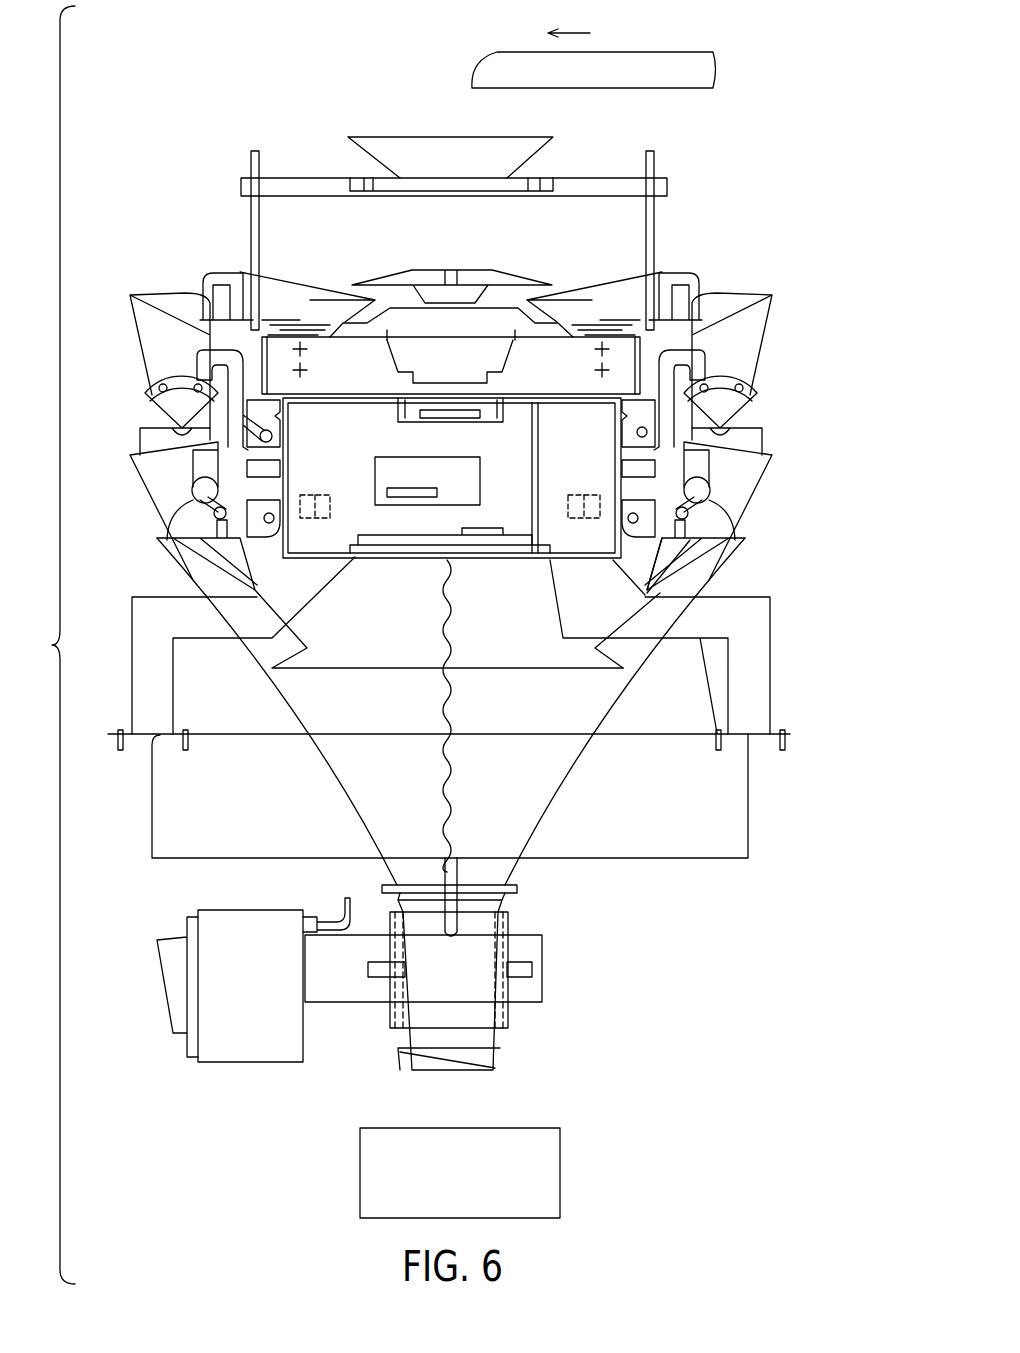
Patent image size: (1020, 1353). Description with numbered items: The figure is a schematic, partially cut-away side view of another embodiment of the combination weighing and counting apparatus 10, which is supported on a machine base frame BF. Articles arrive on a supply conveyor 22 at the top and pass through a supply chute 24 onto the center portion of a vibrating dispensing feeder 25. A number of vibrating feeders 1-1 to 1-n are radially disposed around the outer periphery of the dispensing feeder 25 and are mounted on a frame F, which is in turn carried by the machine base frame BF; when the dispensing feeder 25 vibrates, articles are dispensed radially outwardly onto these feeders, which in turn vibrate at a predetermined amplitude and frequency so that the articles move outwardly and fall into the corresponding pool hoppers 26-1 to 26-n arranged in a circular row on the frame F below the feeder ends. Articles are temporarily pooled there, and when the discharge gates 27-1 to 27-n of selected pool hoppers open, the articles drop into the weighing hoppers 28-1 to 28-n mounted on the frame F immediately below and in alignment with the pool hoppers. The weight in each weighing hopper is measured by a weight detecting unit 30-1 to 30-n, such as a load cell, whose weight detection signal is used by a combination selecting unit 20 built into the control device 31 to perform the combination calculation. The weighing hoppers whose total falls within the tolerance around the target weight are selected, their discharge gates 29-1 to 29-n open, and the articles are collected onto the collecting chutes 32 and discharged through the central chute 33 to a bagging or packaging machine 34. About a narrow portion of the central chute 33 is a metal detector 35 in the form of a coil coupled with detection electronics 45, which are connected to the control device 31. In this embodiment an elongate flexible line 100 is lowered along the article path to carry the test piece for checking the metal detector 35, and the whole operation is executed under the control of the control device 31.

The supply conveyor 22 is at (615, 52).
The supply chute 24 is at (545, 145).
The dispensing feeder 25 is at (488, 267).
The vibrating feeder 1-1 is at (222, 277).
The vibrating feeder 1-n is at (683, 277).
The pool hopper 26-1 is at (157, 345).
The pool hopper 26-n is at (752, 332).
The discharge gate 27-1 is at (173, 410).
The discharge gate 27-n is at (732, 407).
The weighing hopper 28-1 is at (152, 475).
The weighing hopper 28-n is at (738, 467).
The discharge gate 29-1 is at (180, 520).
The discharge gate 29-n is at (715, 515).
The frame F is at (290, 436).
The weight detecting unit 30-1 is at (332, 485).
The weight detecting unit 30-n is at (592, 492).
The control device 31 is at (482, 489).
The combination selecting unit 20 is at (380, 497).
The collecting chute 32 is at (180, 572).
The elongate flexible line 100 is at (445, 795).
The machine base frame BF is at (750, 803).
The central chute 33 is at (515, 866).
The metal detector 35 is at (543, 990).
The detection electronics 45 is at (250, 1064).
The packaging machine 34 is at (560, 1162).
The combination weighing and counting apparatus 10 is at (743, 900).